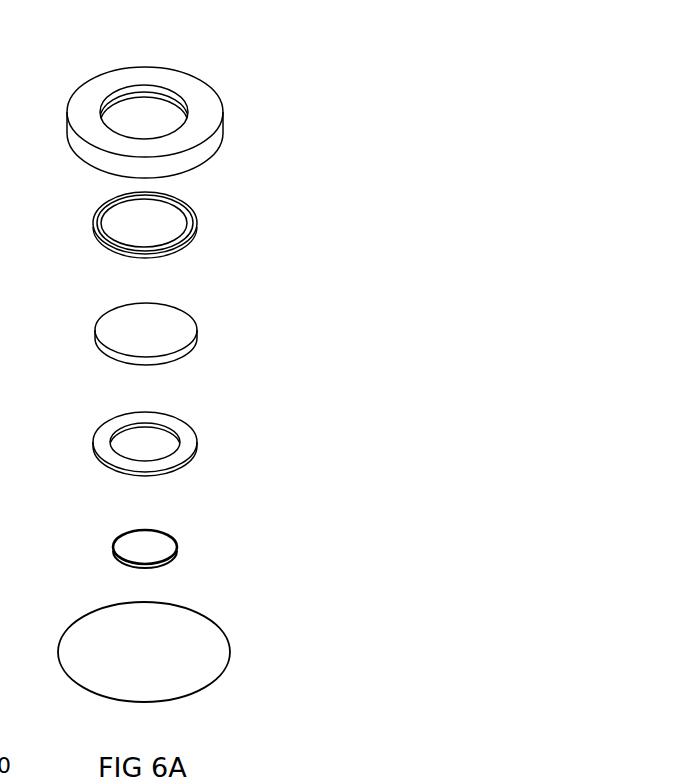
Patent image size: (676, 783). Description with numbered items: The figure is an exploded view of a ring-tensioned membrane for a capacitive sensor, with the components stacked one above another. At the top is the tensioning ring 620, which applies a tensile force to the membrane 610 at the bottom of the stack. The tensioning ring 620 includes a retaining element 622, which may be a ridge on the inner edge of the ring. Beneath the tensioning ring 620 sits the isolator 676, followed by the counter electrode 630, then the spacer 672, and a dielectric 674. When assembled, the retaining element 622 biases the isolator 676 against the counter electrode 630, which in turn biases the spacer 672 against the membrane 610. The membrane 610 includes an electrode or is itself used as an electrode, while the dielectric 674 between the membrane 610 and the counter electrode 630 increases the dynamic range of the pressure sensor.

The tensioning ring 620 is at (198, 97).
The isolator 676 is at (183, 203).
The counter electrode 630 is at (160, 340).
The spacer 672 is at (180, 433).
The dielectric 674 is at (158, 547).
The membrane 610 is at (188, 658).
The retaining element 622 is at (440, 782).